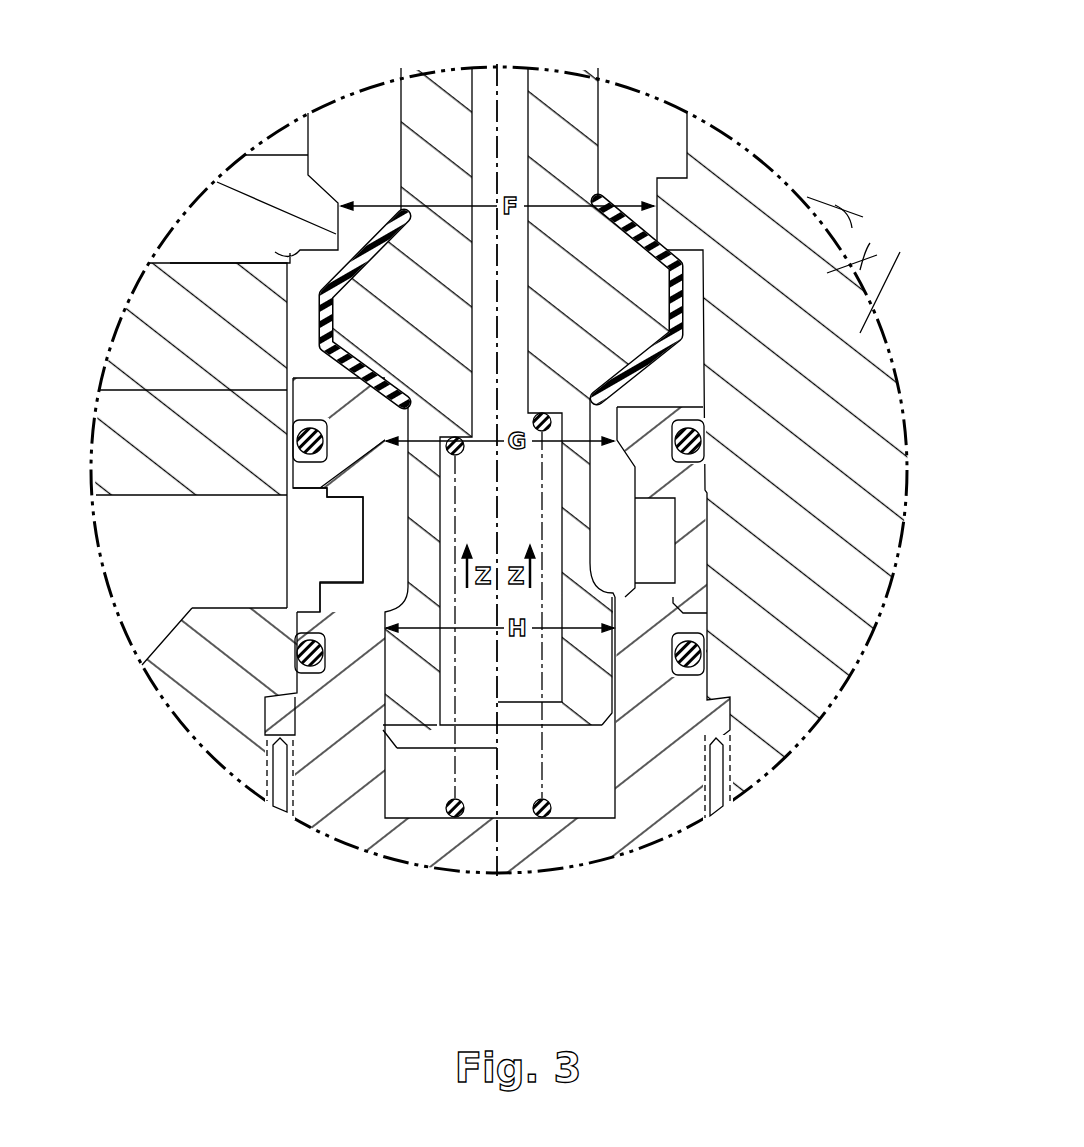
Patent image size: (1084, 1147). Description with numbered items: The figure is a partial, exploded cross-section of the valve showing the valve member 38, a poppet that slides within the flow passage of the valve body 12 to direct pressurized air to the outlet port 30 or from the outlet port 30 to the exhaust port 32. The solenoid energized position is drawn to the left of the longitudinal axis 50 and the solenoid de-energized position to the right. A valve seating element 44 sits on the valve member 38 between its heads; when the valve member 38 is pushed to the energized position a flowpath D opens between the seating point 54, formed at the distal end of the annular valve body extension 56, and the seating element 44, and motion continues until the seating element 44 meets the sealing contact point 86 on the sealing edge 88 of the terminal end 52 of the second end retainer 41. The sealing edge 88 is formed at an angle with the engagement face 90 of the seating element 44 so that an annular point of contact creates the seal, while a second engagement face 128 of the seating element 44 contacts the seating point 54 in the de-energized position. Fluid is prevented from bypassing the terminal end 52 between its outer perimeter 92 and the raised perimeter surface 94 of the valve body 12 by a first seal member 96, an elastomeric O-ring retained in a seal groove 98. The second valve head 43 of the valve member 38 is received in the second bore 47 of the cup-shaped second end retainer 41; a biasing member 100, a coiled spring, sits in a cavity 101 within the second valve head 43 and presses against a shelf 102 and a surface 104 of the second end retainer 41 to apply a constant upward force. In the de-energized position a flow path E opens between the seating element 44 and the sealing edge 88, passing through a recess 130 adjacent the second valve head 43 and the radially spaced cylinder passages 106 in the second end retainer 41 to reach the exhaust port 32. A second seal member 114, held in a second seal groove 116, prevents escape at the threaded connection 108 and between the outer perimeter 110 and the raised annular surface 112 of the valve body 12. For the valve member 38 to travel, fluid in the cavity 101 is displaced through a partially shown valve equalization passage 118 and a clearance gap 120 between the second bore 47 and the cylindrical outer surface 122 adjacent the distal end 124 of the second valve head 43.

The valve body 12 is at (732, 170).
The outlet port 30 is at (222, 308).
The exhaust port 32 is at (175, 550).
The valve member 38 is at (440, 105).
The second end retainer 41 is at (680, 833).
The second valve head 43 is at (417, 717).
The valve seating element 44 is at (678, 252).
The second bore 47 is at (617, 737).
The longitudinal axis 50 is at (503, 75).
The terminal end 52 is at (697, 477).
The seating point 54 is at (303, 248).
The annular valve body extension 56 is at (293, 192).
The sealing contact point 86 is at (650, 400).
The sealing edge 88 is at (635, 383).
The engagement face 90 is at (640, 392).
The outer perimeter 92 is at (290, 385).
The raised perimeter surface 94 is at (290, 420).
The first seal member 96 is at (290, 440).
The seal groove 98 is at (290, 462).
The biasing member 100 is at (542, 818).
The cavity 101 is at (523, 653).
The shelf 102 is at (660, 330).
The surface 104 is at (415, 818).
The cylinder passages 106 is at (200, 560).
The threaded connection 108 is at (730, 803).
The outer perimeter 110 is at (380, 553).
The raised annular surface 112 is at (285, 660).
The second seal member 114 is at (700, 668).
The second seal groove 116 is at (703, 648).
The valve equalization passage 118 is at (533, 130).
The clearance gap 120 is at (600, 687).
The cylindrical outer surface 122 is at (617, 663).
The distal end 124 is at (403, 750).
The second engagement face 128 is at (685, 200).
The recess 130 is at (340, 537).
The flowpath D is at (292, 192).
The flow path E is at (860, 265).